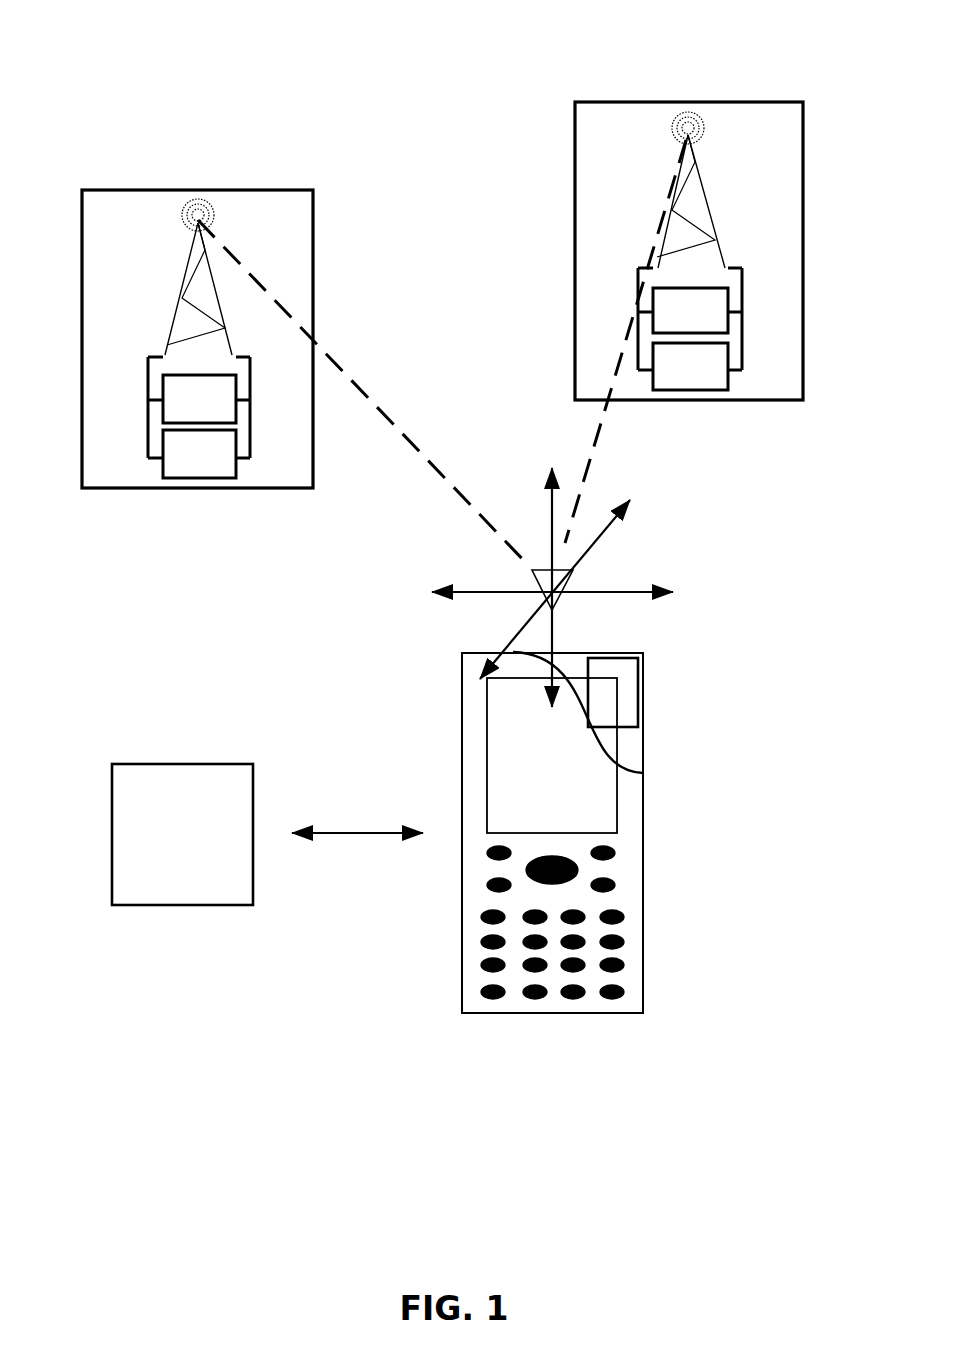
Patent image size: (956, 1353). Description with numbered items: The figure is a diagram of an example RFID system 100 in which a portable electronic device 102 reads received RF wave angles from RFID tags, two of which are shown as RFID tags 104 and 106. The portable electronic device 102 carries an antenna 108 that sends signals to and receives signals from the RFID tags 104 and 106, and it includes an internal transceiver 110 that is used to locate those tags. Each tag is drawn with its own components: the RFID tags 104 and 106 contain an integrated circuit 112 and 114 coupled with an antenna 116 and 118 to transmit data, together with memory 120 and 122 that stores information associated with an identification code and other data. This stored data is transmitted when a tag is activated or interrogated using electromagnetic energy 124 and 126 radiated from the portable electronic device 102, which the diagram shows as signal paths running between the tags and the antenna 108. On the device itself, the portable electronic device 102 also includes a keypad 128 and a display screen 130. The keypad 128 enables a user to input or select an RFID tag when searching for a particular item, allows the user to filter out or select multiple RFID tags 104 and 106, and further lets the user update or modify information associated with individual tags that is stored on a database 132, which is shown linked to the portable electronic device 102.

The RFID system 100 is at (442, 506).
The portable electronic device 102 is at (531, 823).
The RFID tag 104 is at (689, 222).
The RFID tag 106 is at (197, 310).
The antenna 108 is at (532, 587).
The transceiver 110 is at (666, 680).
The integrated circuit 112 is at (725, 298).
The integrated circuit 114 is at (166, 387).
The antenna 116 is at (724, 190).
The antenna 118 is at (169, 277).
The memory 120 is at (725, 353).
The memory 122 is at (166, 449).
The electromagnetic energy 124 is at (599, 341).
The electromagnetic energy 126 is at (364, 393).
The keypad 128 is at (492, 922).
The display screen 130 is at (509, 755).
The database 132 is at (264, 814).